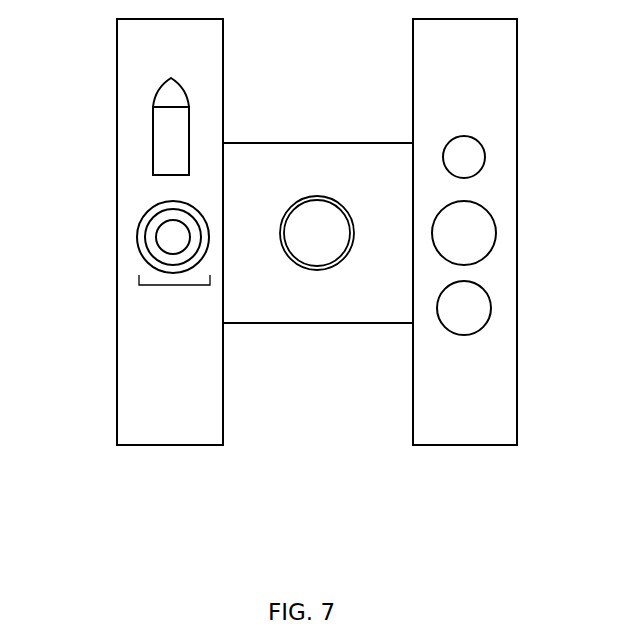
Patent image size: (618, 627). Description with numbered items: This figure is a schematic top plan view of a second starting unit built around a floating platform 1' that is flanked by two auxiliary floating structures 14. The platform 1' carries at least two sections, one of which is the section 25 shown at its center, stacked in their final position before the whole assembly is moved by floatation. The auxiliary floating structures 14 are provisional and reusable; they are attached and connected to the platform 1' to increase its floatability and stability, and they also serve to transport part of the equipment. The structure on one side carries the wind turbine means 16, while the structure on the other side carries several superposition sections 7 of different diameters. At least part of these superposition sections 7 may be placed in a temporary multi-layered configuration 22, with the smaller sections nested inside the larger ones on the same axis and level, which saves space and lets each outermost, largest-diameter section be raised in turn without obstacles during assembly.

The auxiliary floating structures 14 is at (443, 430).
The platform 1' is at (318, 272).
The section 25 is at (307, 268).
The wind turbine means 16 is at (162, 132).
The temporary multi-layered configuration 22 is at (174, 285).
The superposition sections 7 is at (487, 296).